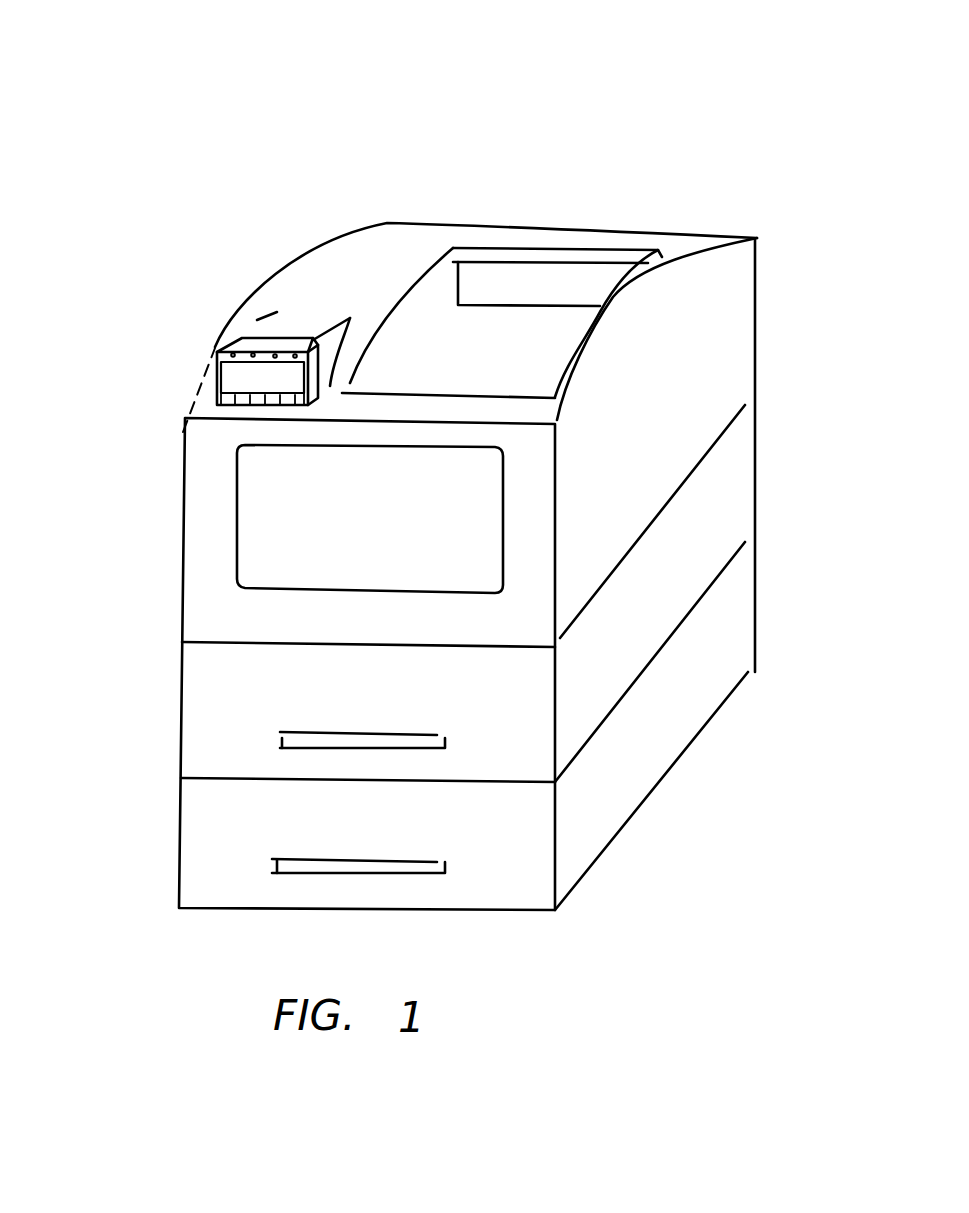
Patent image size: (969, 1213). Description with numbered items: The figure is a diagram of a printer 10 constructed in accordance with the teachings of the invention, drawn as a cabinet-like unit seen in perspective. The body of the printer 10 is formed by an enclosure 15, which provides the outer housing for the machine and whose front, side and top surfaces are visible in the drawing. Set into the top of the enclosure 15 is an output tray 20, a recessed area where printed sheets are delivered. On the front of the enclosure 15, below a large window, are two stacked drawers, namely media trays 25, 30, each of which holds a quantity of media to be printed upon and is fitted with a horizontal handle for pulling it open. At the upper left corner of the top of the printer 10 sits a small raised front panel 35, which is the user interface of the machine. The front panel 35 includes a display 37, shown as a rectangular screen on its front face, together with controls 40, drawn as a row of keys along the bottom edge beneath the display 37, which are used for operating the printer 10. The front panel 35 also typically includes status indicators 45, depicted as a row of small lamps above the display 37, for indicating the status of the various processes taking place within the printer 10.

The printer 10 is at (473, 28).
The enclosure 15 is at (758, 310).
The output tray 20 is at (448, 363).
The media tray 25 is at (190, 715).
The media tray 30 is at (187, 847).
The front panel 35 is at (258, 340).
The display 37 is at (237, 373).
The controls 40 is at (217, 400).
The status indicators 45 is at (220, 350).